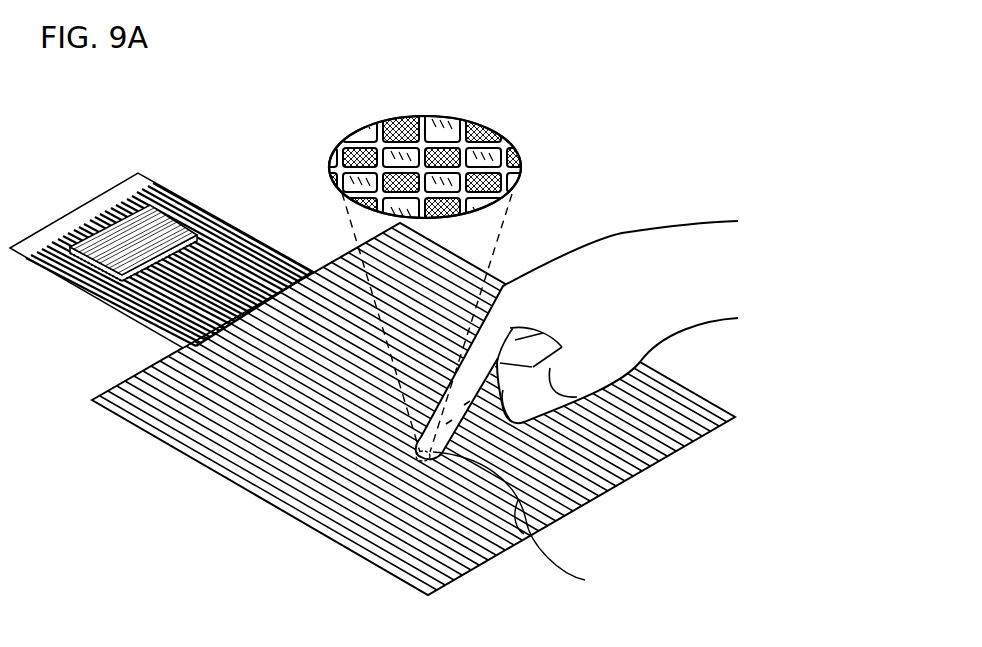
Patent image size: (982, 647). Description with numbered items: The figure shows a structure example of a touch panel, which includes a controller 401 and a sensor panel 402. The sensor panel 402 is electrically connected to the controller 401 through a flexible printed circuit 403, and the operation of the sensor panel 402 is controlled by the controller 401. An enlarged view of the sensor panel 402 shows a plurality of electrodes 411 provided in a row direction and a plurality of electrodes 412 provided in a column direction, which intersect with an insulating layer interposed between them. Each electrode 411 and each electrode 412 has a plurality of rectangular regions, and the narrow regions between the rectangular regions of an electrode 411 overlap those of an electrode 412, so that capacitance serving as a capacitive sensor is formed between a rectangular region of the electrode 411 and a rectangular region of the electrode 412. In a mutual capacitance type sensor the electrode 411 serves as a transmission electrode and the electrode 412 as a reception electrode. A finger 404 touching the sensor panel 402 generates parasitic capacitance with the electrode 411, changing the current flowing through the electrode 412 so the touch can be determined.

The controller 401 is at (90, 207).
The sensor panel 402 is at (250, 493).
The flexible printed circuit 403 is at (92, 297).
The finger 404 is at (530, 524).
The electrode 411 is at (352, 148).
The electrode 412 is at (474, 152).